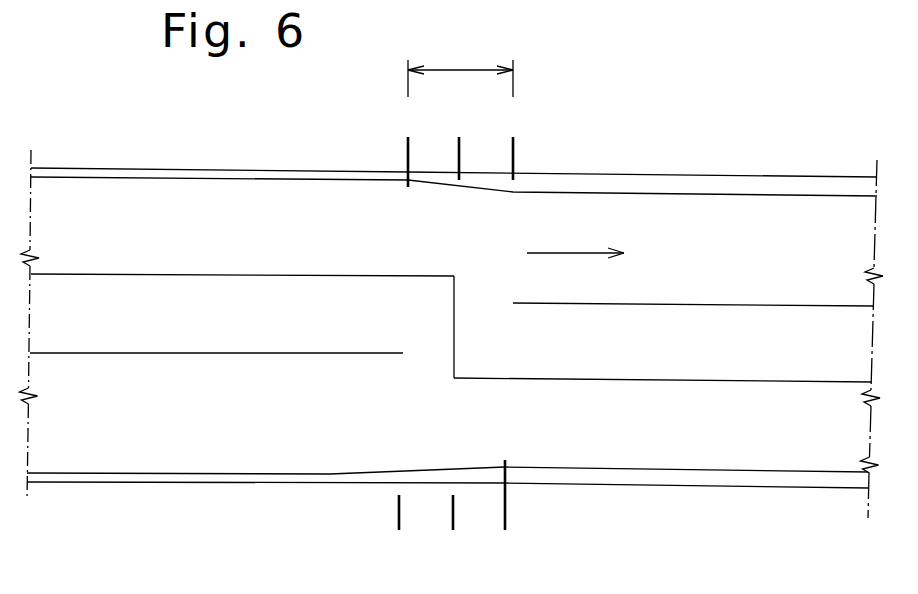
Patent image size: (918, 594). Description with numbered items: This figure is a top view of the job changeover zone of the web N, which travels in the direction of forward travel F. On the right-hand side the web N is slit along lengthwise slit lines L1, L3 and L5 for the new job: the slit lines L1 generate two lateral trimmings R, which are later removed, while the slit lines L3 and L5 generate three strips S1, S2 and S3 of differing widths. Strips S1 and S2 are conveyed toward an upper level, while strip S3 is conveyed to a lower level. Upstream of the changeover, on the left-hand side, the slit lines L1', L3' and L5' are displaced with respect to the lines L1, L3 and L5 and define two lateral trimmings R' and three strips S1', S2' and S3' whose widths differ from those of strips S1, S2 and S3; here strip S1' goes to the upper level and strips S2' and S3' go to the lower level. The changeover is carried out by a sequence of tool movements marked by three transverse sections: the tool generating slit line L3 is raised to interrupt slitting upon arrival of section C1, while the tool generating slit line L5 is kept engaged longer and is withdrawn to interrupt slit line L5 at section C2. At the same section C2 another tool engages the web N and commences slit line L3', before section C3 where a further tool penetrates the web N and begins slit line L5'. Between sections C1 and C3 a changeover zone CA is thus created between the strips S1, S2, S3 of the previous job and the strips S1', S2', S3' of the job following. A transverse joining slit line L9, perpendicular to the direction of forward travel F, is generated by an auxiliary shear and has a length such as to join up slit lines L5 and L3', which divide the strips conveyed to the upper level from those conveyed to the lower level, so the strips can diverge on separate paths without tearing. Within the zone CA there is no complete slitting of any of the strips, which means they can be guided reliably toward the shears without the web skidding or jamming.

The slit line L1 is at (454, 301).
The slit line L1' is at (266, 440).
The slit line L3 is at (693, 279).
The slit line L3' is at (242, 249).
The slit line L5 is at (662, 359).
The slit line L5' is at (216, 327).
The transverse joining slit line L9 is at (456, 322).
The lateral trimmings R is at (642, 159).
The lateral trimmings R' is at (219, 149).
The web N is at (604, 171).
The strip S1 is at (692, 243).
The strip S1' is at (260, 232).
The strip S2 is at (692, 348).
The strip S2' is at (262, 315).
The strip S3 is at (691, 428).
The strip S3' is at (261, 411).
The section C1 is at (511, 341).
The section C2 is at (458, 341).
The section C3 is at (407, 341).
The changeover zone CA is at (460, 71).
The direction of forward travel F is at (578, 251).